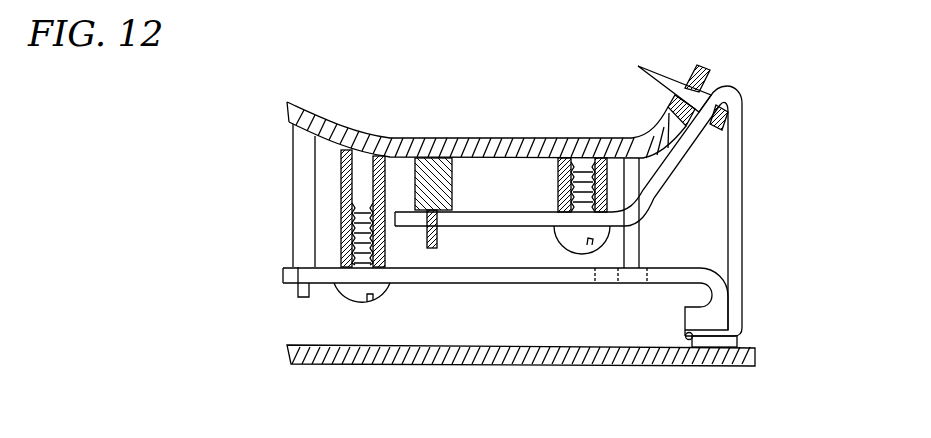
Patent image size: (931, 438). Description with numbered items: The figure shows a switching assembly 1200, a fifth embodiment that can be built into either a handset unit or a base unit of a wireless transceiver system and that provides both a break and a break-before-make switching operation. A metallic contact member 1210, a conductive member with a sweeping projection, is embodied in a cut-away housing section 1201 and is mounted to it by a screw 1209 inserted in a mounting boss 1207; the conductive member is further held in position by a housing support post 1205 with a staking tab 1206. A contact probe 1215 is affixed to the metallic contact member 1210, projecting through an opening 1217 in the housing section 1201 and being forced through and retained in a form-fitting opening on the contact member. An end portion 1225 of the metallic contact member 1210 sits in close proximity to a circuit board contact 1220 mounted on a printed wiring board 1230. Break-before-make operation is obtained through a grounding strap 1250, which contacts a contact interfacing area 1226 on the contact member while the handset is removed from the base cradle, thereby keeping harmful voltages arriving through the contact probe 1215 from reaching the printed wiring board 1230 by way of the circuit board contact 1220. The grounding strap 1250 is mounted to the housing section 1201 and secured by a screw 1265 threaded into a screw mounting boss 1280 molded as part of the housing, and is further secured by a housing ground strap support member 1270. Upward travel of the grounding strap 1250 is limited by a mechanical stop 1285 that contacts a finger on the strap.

The switching assembly 1200 is at (146, 98).
The housing section 1201 is at (510, 138).
The housing support post 1205 is at (452, 190).
The staking tab 1206 is at (440, 243).
The mounting boss 1207 is at (558, 180).
The screw 1209 is at (577, 250).
The metallic contact member 1210 is at (541, 231).
The contact probe 1215 is at (660, 64).
The opening 1217 is at (668, 97).
The circuit board contact 1220 is at (738, 332).
The end portion 1225 is at (685, 335).
The contact interfacing area 1226 is at (682, 306).
The printed wiring board 1230 is at (536, 366).
The grounding strap 1250 is at (483, 284).
The screw 1265 is at (343, 298).
The housing ground strap support member 1270 is at (292, 192).
The screw mounting boss 1280 is at (396, 152).
The mechanical stop 1285 is at (643, 258).